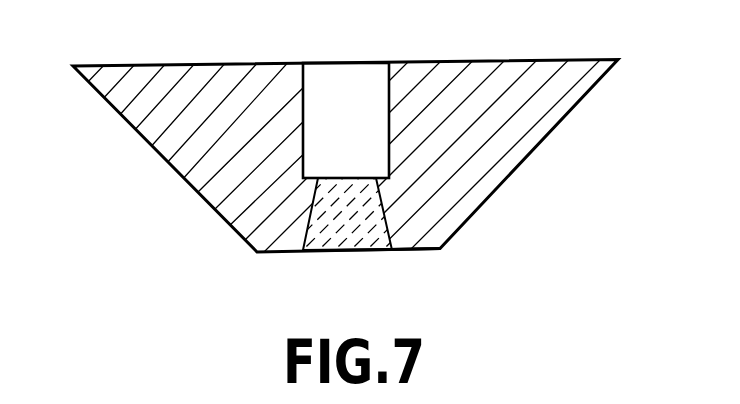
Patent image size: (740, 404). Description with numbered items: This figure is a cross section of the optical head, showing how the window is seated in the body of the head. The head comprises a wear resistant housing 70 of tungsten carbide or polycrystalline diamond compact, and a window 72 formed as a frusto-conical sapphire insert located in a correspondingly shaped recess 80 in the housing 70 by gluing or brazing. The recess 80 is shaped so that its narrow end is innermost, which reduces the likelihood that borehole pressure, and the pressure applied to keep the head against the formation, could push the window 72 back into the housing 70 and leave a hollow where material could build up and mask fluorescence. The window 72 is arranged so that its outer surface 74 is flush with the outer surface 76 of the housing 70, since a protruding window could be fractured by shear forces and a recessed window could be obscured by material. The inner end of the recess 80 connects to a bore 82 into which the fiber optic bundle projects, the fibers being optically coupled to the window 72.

The housing 70 is at (191, 188).
The window 72 is at (347, 232).
The outer surface of the window 74 is at (367, 251).
The outer surface of the housing 76 is at (425, 251).
The recess 80 is at (383, 207).
The bore 82 is at (388, 79).